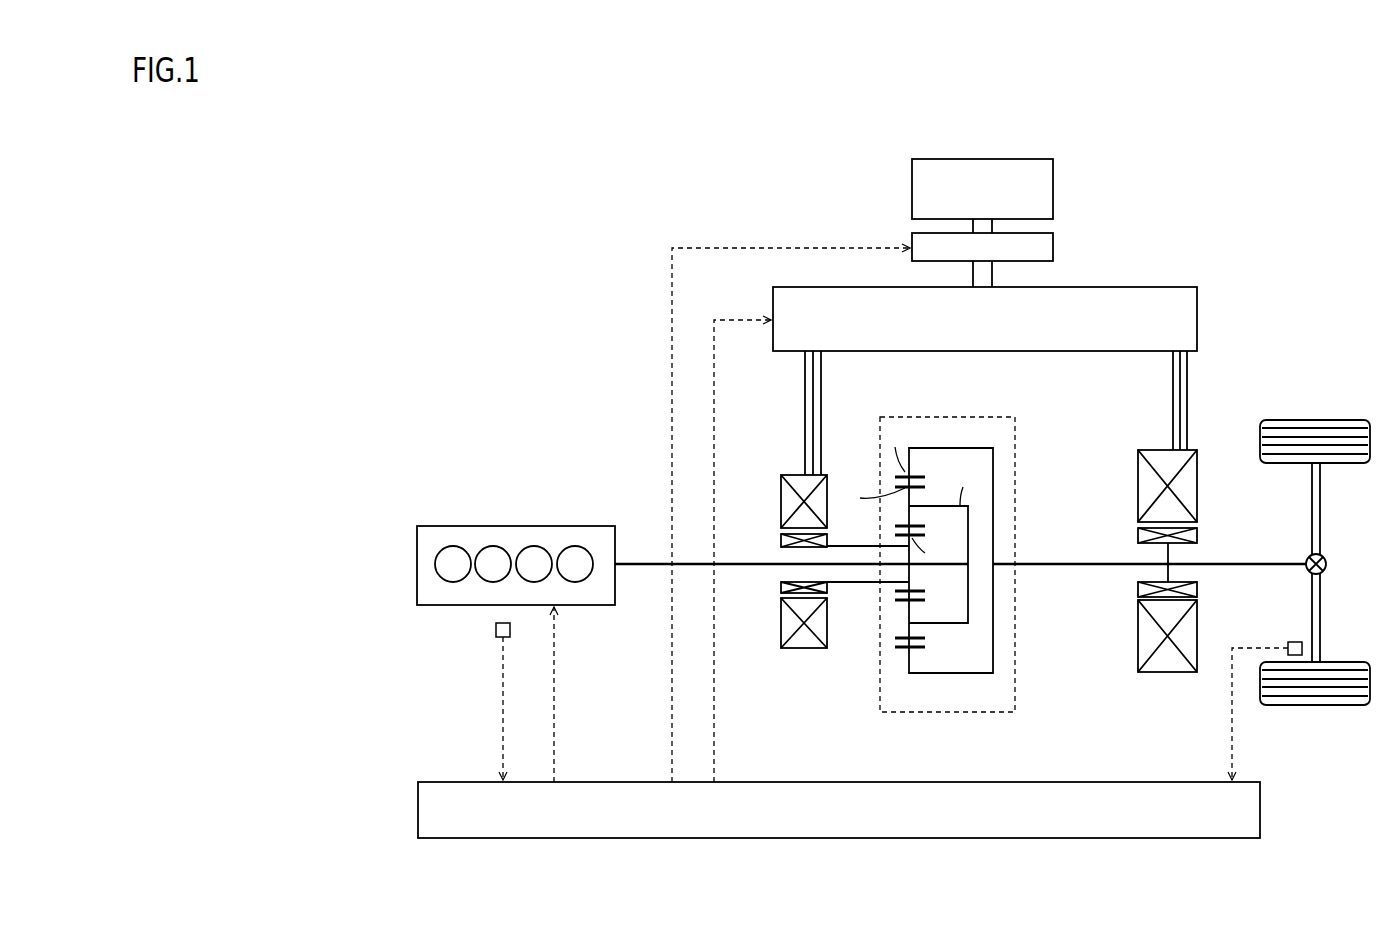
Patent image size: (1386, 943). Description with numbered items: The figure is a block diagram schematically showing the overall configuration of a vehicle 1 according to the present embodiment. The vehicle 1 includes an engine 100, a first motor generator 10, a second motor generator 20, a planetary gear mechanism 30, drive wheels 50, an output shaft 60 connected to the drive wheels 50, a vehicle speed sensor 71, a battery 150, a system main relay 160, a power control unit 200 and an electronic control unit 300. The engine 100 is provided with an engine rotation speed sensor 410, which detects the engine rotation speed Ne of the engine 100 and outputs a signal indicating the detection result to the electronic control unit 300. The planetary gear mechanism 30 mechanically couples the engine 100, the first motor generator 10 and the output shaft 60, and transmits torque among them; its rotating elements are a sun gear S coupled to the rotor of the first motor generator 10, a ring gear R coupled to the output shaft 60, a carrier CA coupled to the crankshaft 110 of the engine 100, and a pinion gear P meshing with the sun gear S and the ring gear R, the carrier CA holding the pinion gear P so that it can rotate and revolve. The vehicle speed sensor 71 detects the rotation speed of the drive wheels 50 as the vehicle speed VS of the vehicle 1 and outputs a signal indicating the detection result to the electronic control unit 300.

The vehicle 1 is at (1180, 164).
The motor generator 10 is at (792, 473).
The motor generator 20 is at (1152, 447).
The planetary gear mechanism 30 is at (983, 417).
The drive wheels 50 is at (1337, 420).
The output shaft 60 is at (1248, 560).
The vehicle speed sensor 71 is at (1294, 640).
The engine 100 is at (458, 525).
The crankshaft 110 is at (637, 560).
The battery 150 is at (1055, 193).
The system main relay 160 is at (1055, 250).
The power control unit 200 is at (1145, 287).
The electronic control unit 300 is at (1262, 808).
The engine rotation speed sensor 410 is at (495, 630).